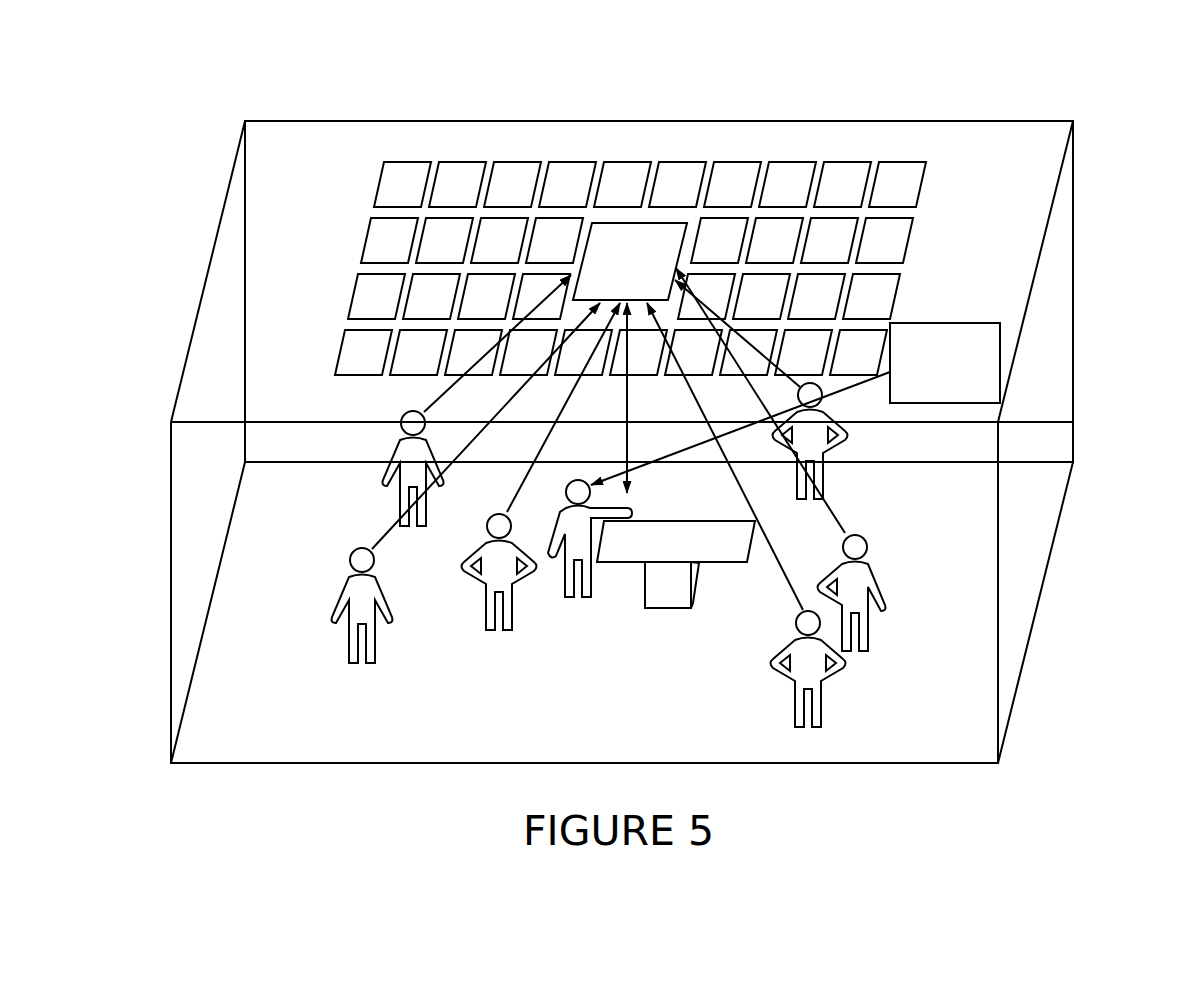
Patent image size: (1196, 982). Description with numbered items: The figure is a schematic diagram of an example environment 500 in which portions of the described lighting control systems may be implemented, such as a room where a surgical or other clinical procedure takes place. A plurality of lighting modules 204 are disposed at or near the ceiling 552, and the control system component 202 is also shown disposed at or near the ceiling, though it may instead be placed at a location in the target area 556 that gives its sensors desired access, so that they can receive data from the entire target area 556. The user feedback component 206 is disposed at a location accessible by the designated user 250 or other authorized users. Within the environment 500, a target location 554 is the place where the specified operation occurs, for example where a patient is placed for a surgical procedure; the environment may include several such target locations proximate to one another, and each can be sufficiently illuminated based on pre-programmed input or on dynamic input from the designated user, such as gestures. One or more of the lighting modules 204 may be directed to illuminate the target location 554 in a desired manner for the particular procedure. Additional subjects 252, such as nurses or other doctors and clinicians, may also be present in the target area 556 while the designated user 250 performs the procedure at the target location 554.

The example environment 500 is at (1092, 115).
The control system component 202 is at (662, 218).
The lighting modules 204 is at (927, 193).
The user feedback component 206 is at (996, 322).
The ceiling 552 is at (270, 370).
The target area 556 is at (282, 553).
The designated user 250 is at (582, 603).
The additional subjects 252 is at (443, 647).
The target location 554 is at (707, 570).